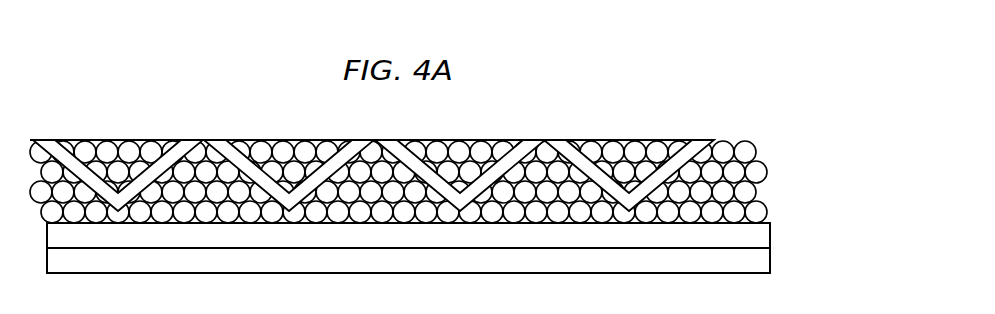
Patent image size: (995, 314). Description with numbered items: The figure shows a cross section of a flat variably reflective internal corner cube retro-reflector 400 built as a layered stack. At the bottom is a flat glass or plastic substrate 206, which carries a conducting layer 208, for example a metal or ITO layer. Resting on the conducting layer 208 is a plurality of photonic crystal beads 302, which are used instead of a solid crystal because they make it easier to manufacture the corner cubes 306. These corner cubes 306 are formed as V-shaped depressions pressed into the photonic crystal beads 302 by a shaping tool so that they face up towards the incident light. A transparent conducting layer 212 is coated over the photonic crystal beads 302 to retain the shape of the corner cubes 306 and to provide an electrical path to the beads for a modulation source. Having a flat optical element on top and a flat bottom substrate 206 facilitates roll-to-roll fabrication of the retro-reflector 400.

The flat variably reflective internal corner cube retro-reflector 400 is at (185, 116).
The corner cubes 306 is at (631, 172).
The transparent conducting layer 212 is at (706, 140).
The photonic crystal beads 302 is at (770, 176).
The conducting layer 208 is at (770, 232).
The glass or plastic substrate 206 is at (770, 262).